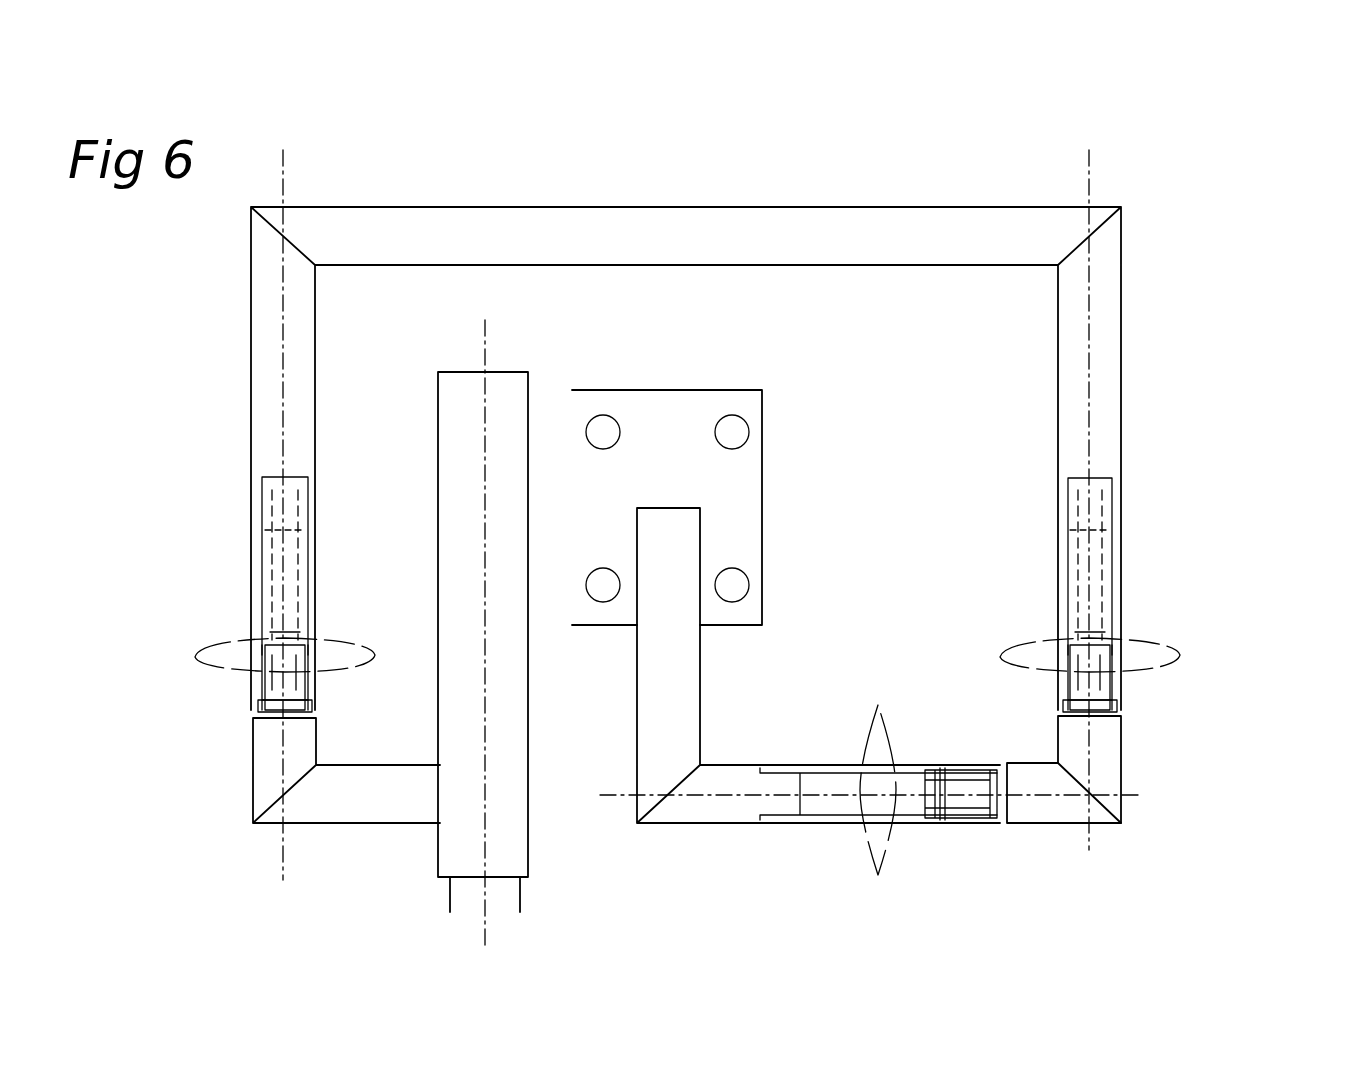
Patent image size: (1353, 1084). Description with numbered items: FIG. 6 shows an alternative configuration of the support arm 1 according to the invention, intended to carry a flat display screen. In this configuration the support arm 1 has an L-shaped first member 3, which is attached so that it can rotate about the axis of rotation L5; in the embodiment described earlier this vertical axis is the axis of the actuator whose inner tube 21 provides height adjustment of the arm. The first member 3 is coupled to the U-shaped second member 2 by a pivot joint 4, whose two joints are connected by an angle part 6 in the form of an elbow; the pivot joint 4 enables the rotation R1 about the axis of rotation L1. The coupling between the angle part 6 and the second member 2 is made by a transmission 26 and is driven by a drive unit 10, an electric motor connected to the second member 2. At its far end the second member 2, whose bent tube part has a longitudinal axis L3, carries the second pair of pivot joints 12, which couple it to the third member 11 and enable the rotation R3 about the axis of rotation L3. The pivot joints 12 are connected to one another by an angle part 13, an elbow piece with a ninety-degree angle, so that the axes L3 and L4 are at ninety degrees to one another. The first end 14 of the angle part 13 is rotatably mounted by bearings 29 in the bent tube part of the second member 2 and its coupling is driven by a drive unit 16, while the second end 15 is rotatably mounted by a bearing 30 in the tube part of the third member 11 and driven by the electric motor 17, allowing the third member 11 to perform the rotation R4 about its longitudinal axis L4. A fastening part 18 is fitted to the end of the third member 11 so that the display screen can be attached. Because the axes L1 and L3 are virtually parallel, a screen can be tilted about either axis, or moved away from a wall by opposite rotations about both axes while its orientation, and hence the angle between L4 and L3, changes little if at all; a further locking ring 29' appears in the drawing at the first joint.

The support arm 1 is at (1172, 182).
The second member 2 is at (337, 212).
The first member 3 is at (360, 812).
The pivot joint 4 is at (205, 689).
The angle part 6 is at (262, 700).
The drive unit 10 is at (300, 553).
The third member 11 is at (676, 814).
The pivot joints 12 is at (1118, 826).
The angle part 13 is at (1028, 815).
The first end 14 is at (1110, 648).
The second end 15 is at (958, 815).
The drive unit 16 is at (1092, 548).
The electric motor 17 is at (830, 805).
The fastening part 18 is at (742, 484).
The inner tube 21 is at (512, 900).
The transmission 26 is at (272, 634).
The bearings 29 is at (1126, 688).
The locking ring 29' is at (324, 680).
The bearing 30 is at (990, 765).
The first longitudinal axis L1 is at (283, 160).
The longitudinal axis L3 is at (1098, 156).
The longitudinal axis L4 is at (1146, 790).
The longitudinal axis L5 is at (485, 312).
The rotation R1 is at (265, 655).
The rotational movement R3 is at (1109, 655).
The rotational movement R4 is at (882, 809).